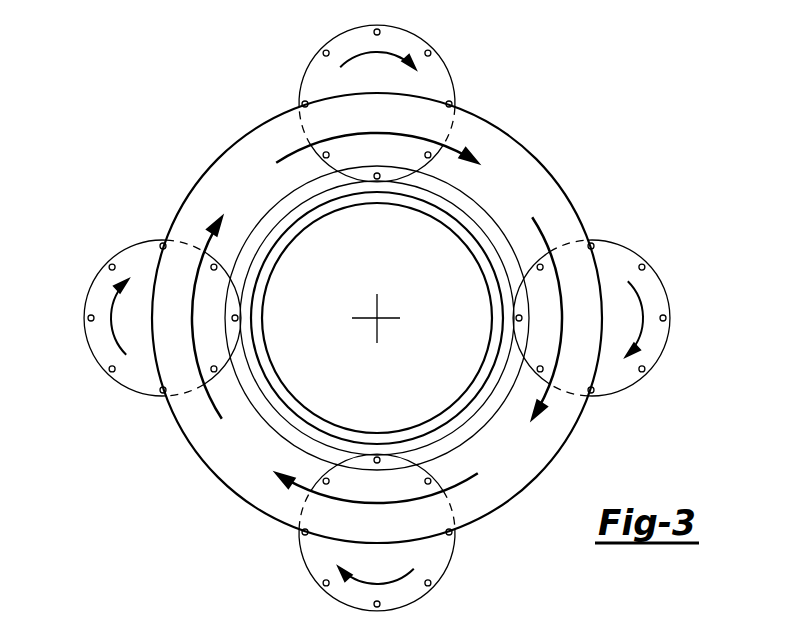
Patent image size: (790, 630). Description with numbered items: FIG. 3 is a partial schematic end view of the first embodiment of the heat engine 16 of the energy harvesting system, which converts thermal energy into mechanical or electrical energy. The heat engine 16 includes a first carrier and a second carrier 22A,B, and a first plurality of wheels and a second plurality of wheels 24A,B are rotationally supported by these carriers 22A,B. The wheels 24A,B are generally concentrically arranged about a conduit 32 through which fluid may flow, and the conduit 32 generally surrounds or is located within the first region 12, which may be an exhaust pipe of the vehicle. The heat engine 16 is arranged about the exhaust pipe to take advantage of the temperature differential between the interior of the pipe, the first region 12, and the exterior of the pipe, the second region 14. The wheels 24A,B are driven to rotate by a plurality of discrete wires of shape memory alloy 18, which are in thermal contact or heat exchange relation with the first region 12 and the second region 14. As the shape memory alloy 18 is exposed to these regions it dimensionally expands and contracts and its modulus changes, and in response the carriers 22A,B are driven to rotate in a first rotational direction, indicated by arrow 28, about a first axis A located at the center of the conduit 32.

The first region 12 is at (389, 247).
The second region 14 is at (627, 221).
The heat engine 16 is at (208, 142).
The shape memory alloy 18 is at (429, 50).
The first and second carriers 22A,B is at (522, 144).
The first and second pluralities of wheels 24A,B is at (323, 48).
The arrow indicating first rotational direction 28 is at (277, 162).
The conduit 32 is at (473, 400).
The first axis A is at (373, 318).